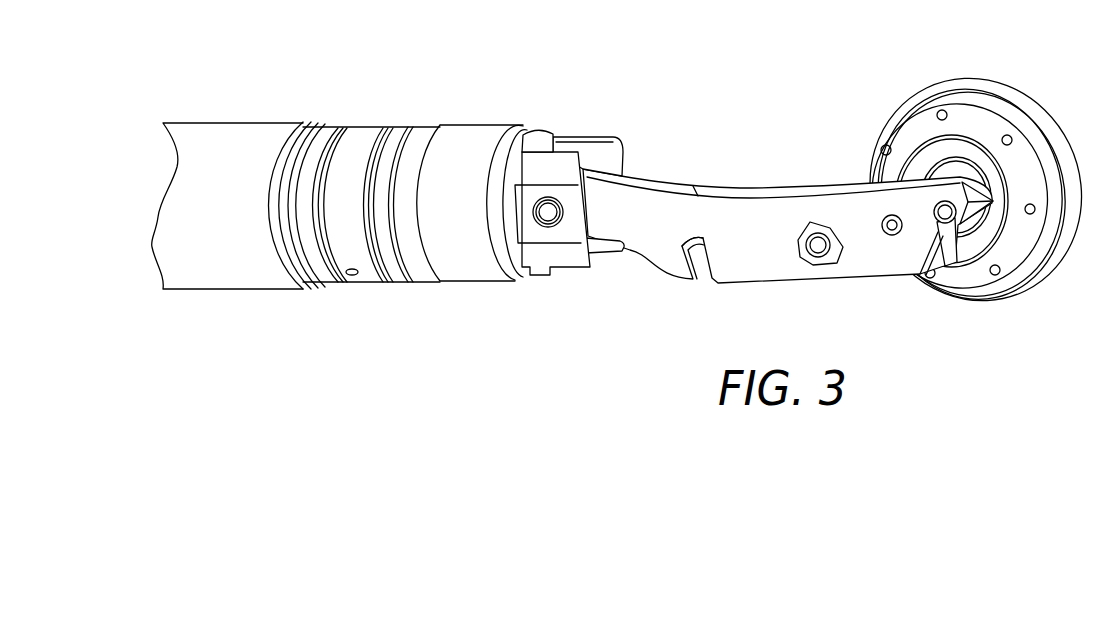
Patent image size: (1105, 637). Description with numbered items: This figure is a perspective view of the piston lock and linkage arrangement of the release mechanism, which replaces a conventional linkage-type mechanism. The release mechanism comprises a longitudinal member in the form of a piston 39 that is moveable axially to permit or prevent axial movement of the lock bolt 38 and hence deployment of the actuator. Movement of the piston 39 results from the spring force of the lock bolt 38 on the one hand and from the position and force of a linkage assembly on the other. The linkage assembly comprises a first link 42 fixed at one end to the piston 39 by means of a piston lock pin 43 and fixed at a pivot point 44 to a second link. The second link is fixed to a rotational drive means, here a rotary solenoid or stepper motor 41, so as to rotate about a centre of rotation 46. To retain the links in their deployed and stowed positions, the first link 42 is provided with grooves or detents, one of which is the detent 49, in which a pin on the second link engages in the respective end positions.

The lock bolt 38 is at (145, 182).
The piston 39 is at (485, 127).
The rotary solenoid or stepper motor 41 is at (928, 87).
The first link 42 is at (663, 185).
The piston lock pin 43 is at (552, 211).
The pivot point 44 is at (812, 250).
The centre of rotation 46 is at (884, 231).
The groove or detent 49 is at (707, 282).